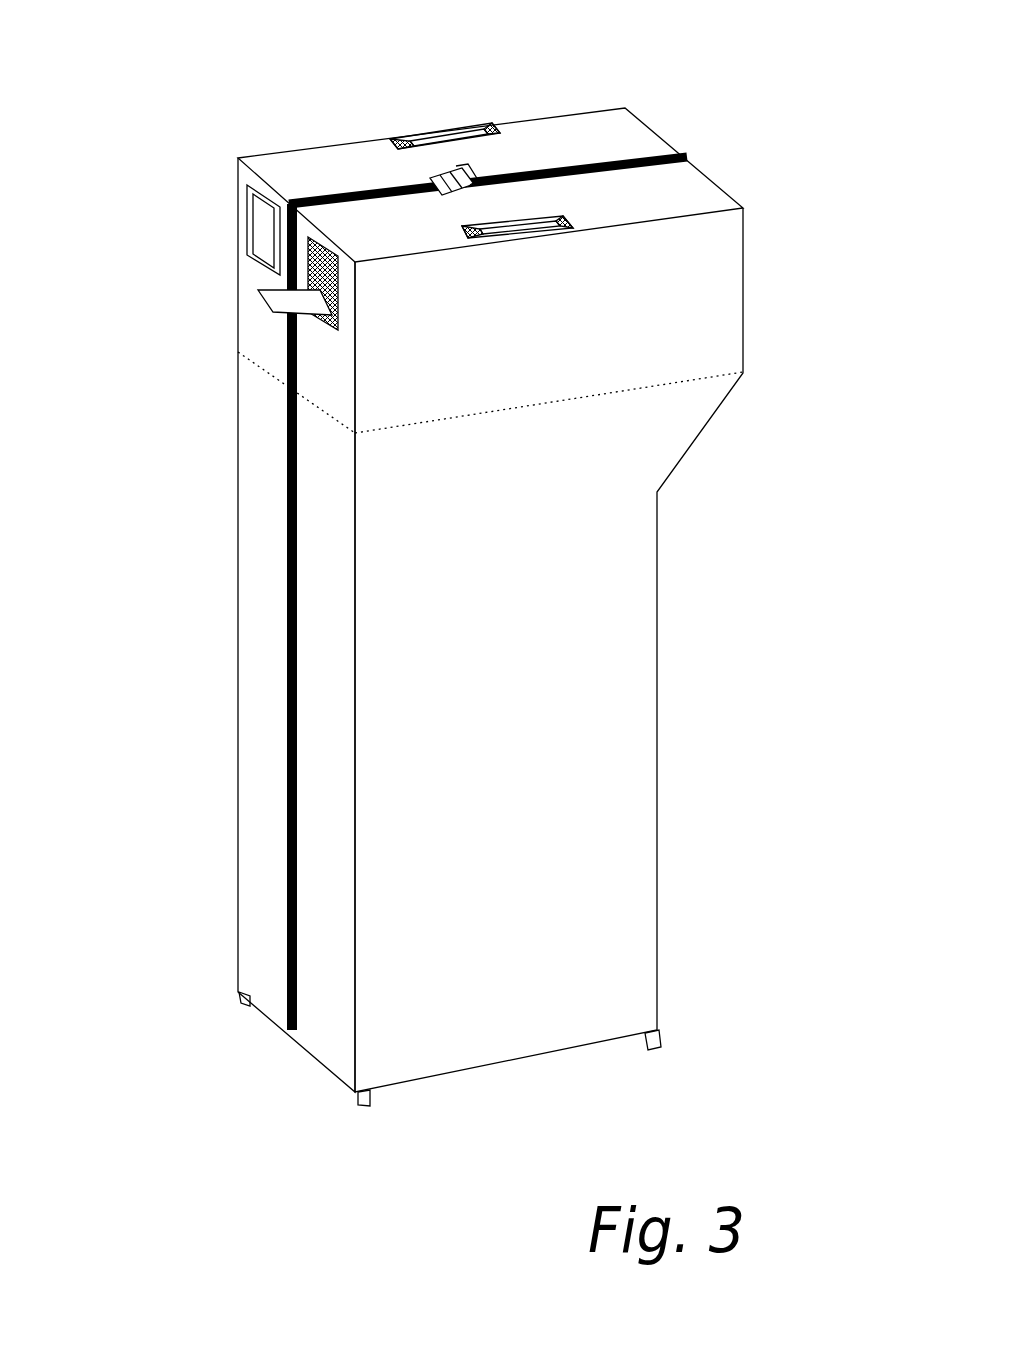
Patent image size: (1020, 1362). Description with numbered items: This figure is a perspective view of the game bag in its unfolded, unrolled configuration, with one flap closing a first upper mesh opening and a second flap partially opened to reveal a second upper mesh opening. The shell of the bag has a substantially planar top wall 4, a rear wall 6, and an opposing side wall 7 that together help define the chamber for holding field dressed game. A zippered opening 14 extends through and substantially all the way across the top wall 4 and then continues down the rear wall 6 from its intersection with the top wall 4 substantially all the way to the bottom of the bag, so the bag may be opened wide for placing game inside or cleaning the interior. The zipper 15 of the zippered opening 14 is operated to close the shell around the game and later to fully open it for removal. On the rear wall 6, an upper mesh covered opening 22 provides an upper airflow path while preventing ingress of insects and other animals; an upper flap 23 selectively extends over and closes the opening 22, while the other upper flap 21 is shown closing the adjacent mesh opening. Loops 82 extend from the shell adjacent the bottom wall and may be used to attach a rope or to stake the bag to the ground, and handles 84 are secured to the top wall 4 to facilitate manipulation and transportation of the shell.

The top wall 4 is at (544, 145).
The rear wall 6 is at (255, 680).
The side wall 7 is at (549, 650).
The zippered opening 14 is at (605, 162).
The zipper 15 is at (445, 190).
The upper flap 21 is at (265, 228).
The upper mesh covered opening 22 is at (313, 267).
The upper flap 23 is at (273, 310).
The loops 82 is at (240, 998).
The handles 84 is at (442, 145).